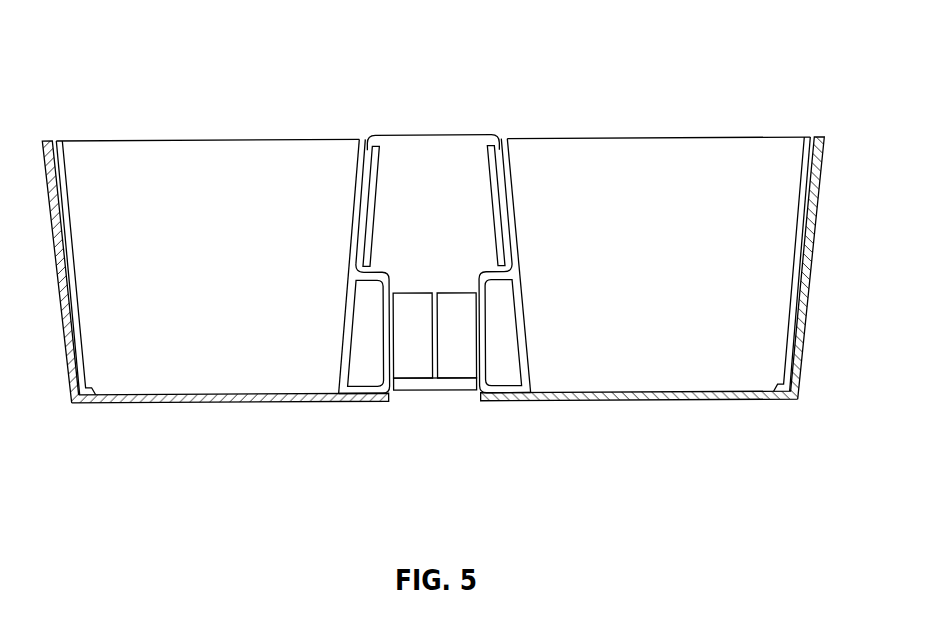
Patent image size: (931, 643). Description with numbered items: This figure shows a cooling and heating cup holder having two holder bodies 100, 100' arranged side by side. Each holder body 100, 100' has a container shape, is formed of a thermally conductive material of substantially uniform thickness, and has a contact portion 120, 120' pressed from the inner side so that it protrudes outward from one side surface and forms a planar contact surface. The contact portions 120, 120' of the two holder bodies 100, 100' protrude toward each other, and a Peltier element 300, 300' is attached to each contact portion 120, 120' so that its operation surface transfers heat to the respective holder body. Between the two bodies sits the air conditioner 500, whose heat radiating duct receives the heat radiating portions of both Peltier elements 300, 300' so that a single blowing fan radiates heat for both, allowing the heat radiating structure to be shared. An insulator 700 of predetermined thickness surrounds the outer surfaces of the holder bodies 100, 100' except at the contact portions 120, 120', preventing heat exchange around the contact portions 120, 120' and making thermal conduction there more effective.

The holder body 100 is at (201, 208).
The holder body 100' is at (652, 204).
The contact portion 120 is at (357, 318).
The contact portion 120' is at (512, 317).
The Peltier element 300 is at (360, 163).
The Peltier element 300' is at (509, 162).
The air conditioner 500 is at (435, 426).
The insulator 700 is at (166, 397).